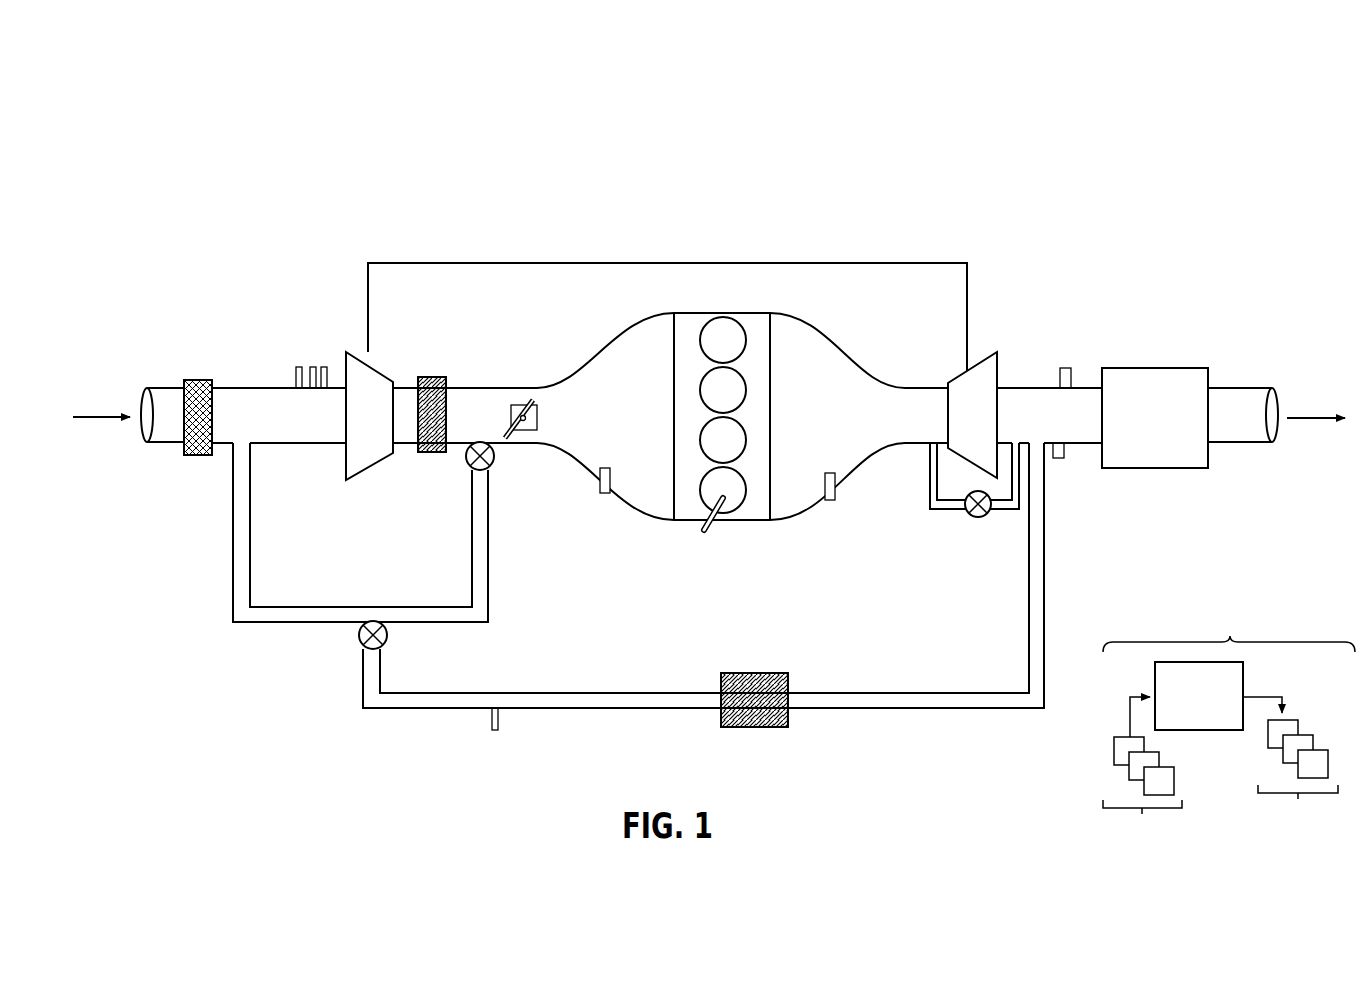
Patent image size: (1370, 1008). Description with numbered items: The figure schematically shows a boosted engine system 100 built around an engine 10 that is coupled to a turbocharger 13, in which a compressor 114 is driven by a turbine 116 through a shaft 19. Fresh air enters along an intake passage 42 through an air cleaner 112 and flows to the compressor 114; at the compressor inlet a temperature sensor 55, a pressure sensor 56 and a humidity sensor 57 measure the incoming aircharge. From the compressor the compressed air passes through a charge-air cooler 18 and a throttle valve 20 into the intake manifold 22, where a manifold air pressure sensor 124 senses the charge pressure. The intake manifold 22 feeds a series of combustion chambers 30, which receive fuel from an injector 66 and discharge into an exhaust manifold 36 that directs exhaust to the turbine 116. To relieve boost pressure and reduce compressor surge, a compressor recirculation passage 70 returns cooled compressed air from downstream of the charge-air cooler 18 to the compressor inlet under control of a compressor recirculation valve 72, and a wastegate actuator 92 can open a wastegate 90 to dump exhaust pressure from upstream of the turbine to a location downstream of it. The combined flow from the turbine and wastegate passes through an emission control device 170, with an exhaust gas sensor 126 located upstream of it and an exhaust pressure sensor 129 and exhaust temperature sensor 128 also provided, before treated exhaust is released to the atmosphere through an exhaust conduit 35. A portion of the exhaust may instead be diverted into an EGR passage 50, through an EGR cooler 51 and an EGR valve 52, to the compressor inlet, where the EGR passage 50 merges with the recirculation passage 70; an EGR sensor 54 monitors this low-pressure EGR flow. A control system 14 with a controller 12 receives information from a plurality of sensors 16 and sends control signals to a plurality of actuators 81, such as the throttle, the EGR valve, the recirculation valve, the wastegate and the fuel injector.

The engine system 100 is at (1270, 98).
The engine 10 is at (770, 398).
The controller 12 is at (1206, 699).
The turbocharger 13 is at (362, 490).
The control system 14 is at (1229, 622).
The sensors 16 is at (1142, 795).
The charge-air cooler 18 is at (433, 377).
The shaft 19 is at (658, 263).
The throttle valve 20 is at (537, 422).
The intake manifold 22 is at (637, 428).
The combustion chambers 30 is at (742, 336).
The exhaust conduit 35 is at (1254, 388).
The exhaust manifold 36 is at (847, 428).
The intake passage 42 is at (172, 444).
The EGR passage 50 is at (848, 708).
The EGR cooler 51 is at (745, 673).
The EGR valve 52 is at (360, 640).
The EGR sensor 54 is at (494, 732).
The temperature sensor 55 is at (299, 367).
The pressure sensor 56 is at (313, 367).
The humidity sensor 57 is at (324, 367).
The injector 66 is at (716, 521).
The compressor recirculation passage 70 is at (490, 528).
The compressor recirculation valve 72 is at (494, 463).
The actuators 81 is at (1298, 778).
The wastegate 90 is at (930, 509).
The wastegate actuator 92 is at (978, 517).
The air cleaner 112 is at (197, 380).
The compressor 114 is at (383, 424).
The turbine 116 is at (987, 424).
The manifold air pressure sensor 124 is at (600, 482).
The exhaust gas sensor 126 is at (835, 479).
The exhaust temperature sensor 128 is at (1058, 458).
The exhaust pressure sensor 129 is at (1066, 368).
The emission control device 170 is at (1140, 368).